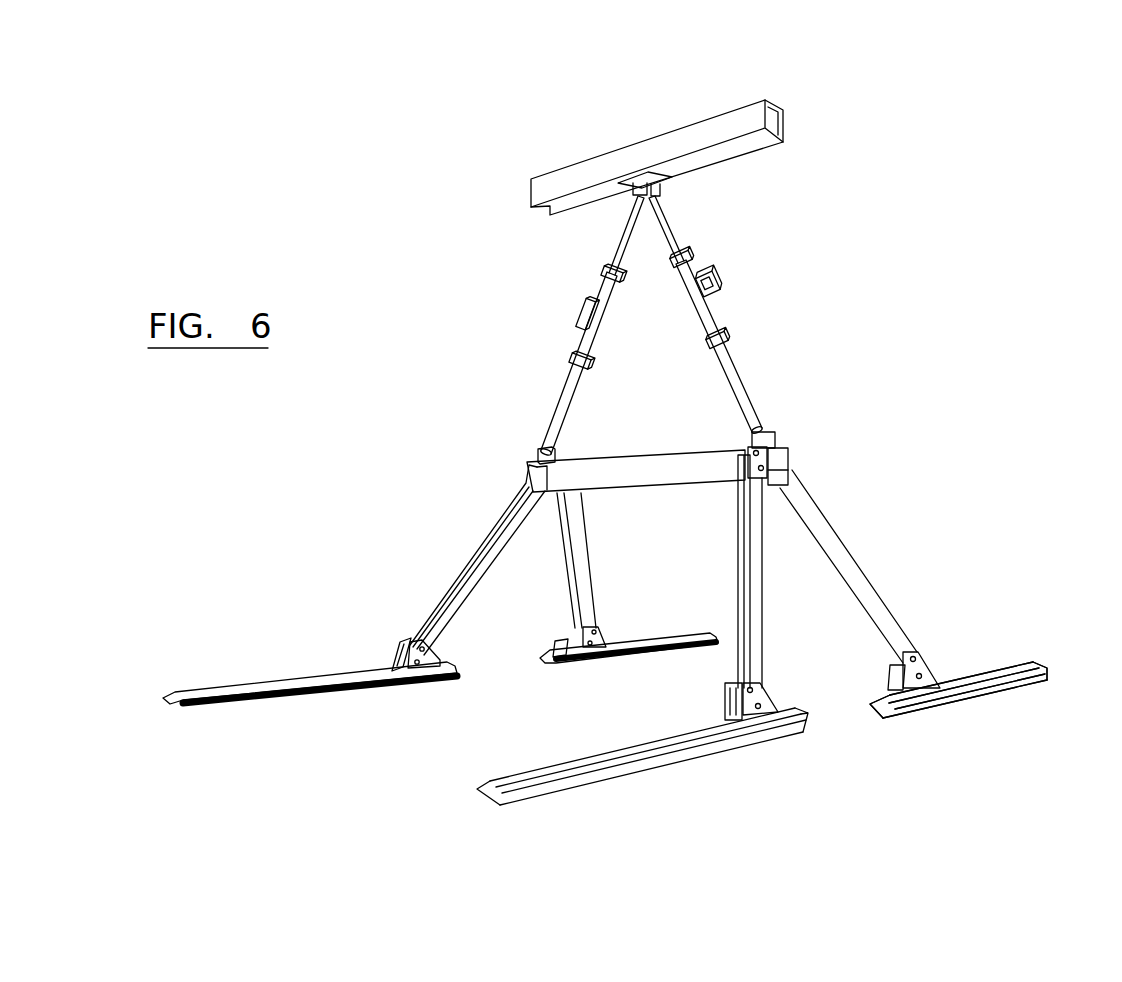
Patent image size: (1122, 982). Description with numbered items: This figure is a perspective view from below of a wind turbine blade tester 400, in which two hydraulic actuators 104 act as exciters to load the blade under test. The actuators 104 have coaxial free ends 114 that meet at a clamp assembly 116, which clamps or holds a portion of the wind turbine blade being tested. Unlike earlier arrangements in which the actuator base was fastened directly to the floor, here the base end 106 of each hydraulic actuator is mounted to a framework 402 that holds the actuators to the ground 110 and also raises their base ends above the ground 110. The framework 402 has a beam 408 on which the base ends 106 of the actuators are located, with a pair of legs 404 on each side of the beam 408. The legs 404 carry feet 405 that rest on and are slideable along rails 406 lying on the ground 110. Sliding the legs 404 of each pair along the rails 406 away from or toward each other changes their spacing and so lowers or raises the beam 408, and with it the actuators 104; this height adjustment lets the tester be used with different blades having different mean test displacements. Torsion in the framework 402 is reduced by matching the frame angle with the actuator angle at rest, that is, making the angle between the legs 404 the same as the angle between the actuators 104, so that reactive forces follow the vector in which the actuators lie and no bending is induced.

The wind turbine blade tester 400 is at (515, 273).
The clamp assembly 116 is at (668, 147).
The coaxial free ends 114 is at (652, 187).
The hydraulic actuators 104 is at (572, 390).
The base end 106 is at (540, 452).
The beam 408 is at (792, 463).
The framework 402 is at (788, 562).
The legs 404 is at (870, 612).
The feet 405 is at (403, 650).
The rails 406 is at (675, 633).
The ground 110 is at (977, 703).